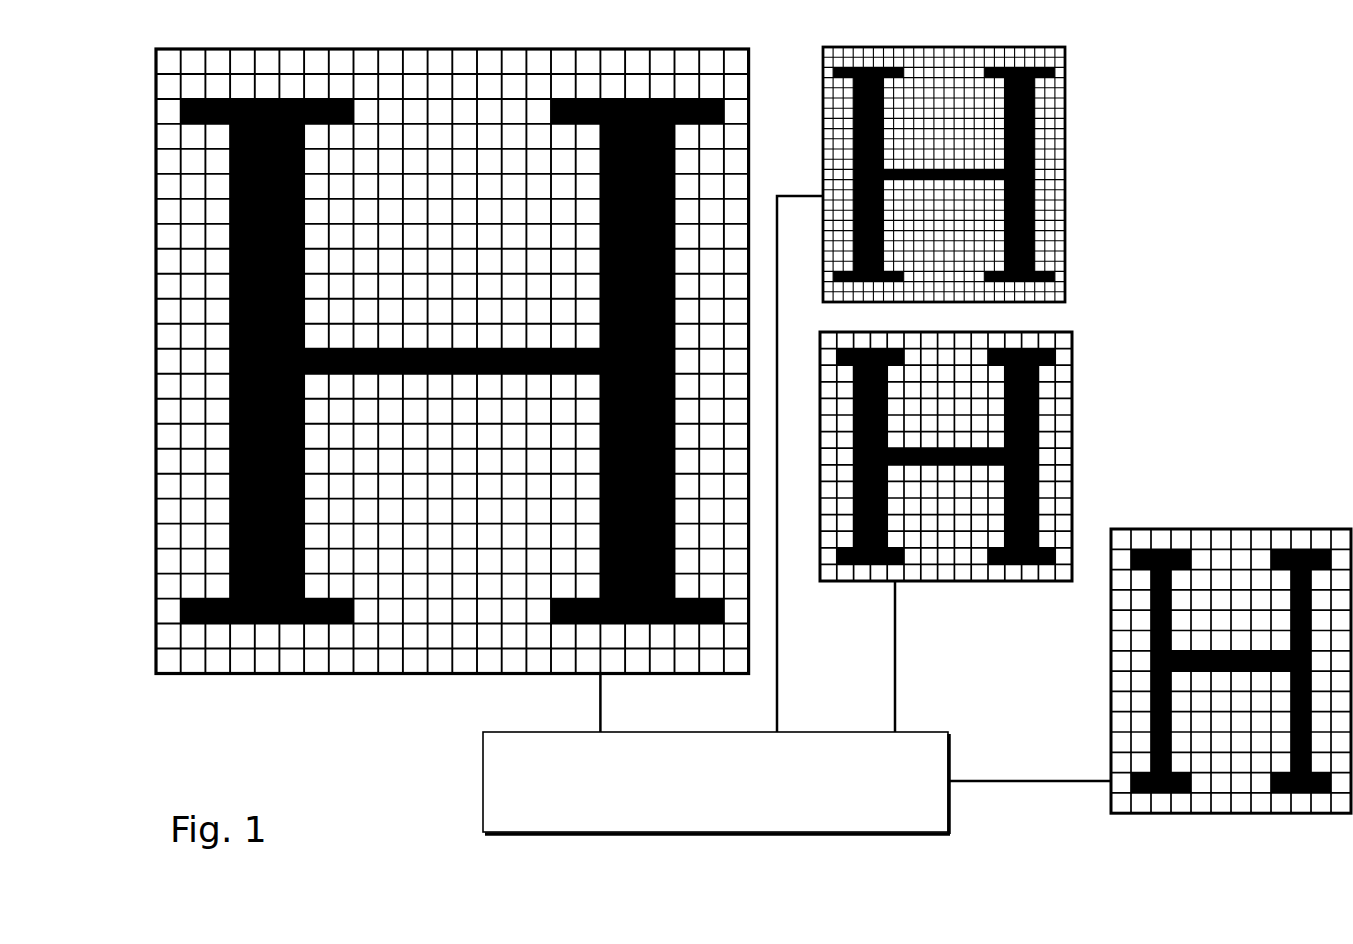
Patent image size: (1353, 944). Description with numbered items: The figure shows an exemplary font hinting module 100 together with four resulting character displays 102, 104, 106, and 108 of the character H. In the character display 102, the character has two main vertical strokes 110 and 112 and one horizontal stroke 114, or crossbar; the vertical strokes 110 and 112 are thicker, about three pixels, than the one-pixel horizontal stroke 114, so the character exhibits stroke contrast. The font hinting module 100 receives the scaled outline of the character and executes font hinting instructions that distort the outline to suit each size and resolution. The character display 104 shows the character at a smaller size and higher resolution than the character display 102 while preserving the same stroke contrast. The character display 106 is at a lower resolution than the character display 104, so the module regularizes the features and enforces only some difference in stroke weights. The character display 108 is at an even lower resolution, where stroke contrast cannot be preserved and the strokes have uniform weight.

The font hinting module 100 is at (716, 783).
The character display 102 is at (437, 676).
The character display 104 is at (1065, 127).
The character display 106 is at (1072, 367).
The character display 108 is at (1111, 653).
The vertical stroke 110 is at (303, 257).
The vertical stroke 112 is at (600, 257).
The horizontal stroke 114 is at (442, 375).